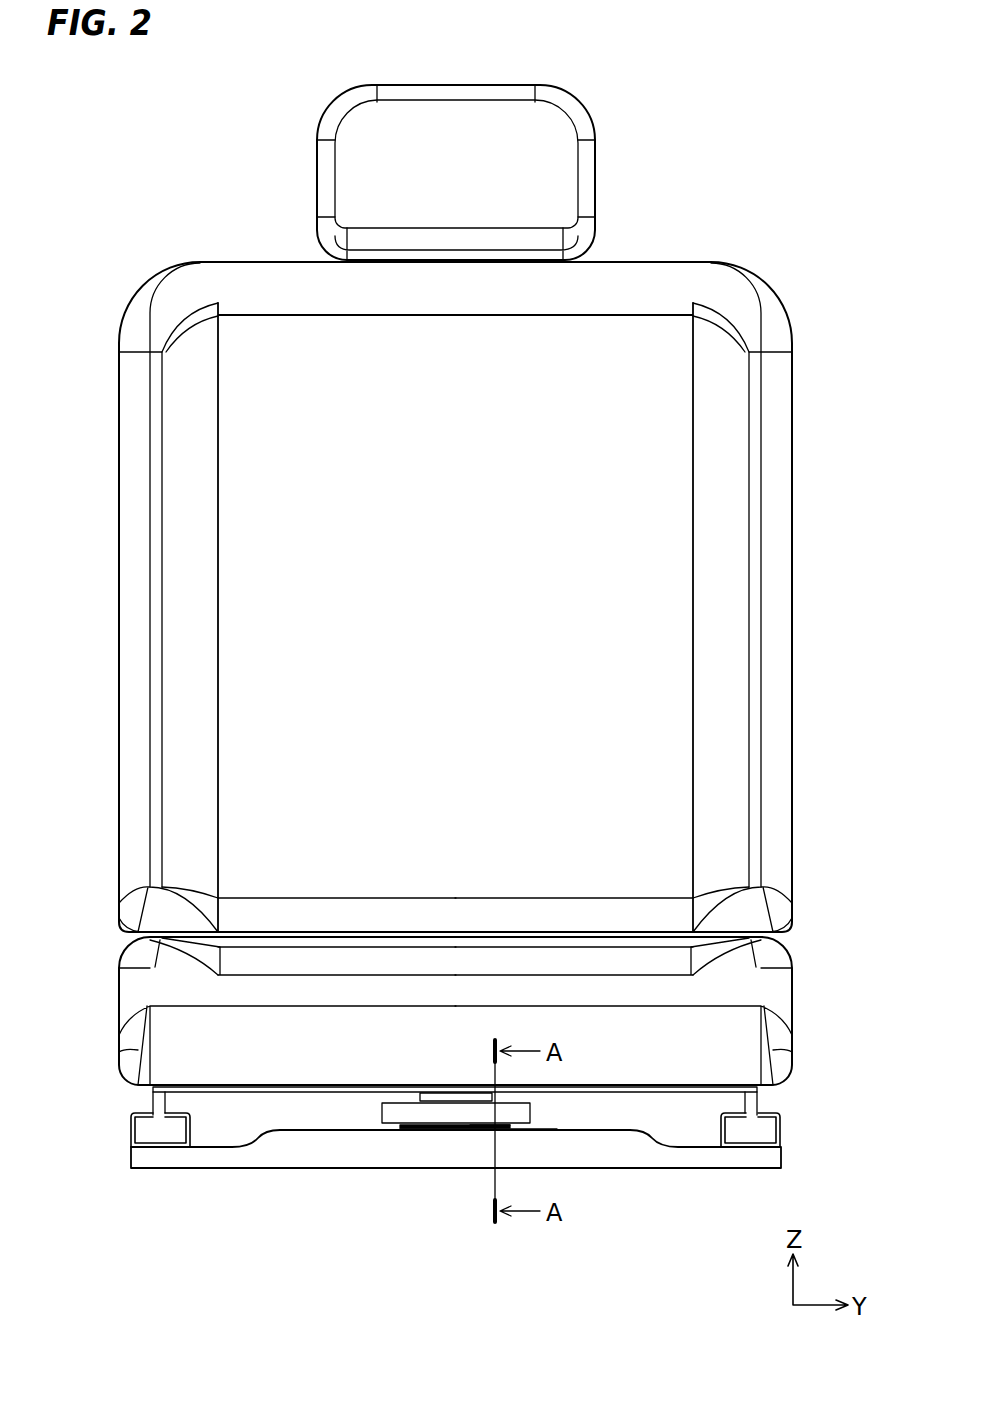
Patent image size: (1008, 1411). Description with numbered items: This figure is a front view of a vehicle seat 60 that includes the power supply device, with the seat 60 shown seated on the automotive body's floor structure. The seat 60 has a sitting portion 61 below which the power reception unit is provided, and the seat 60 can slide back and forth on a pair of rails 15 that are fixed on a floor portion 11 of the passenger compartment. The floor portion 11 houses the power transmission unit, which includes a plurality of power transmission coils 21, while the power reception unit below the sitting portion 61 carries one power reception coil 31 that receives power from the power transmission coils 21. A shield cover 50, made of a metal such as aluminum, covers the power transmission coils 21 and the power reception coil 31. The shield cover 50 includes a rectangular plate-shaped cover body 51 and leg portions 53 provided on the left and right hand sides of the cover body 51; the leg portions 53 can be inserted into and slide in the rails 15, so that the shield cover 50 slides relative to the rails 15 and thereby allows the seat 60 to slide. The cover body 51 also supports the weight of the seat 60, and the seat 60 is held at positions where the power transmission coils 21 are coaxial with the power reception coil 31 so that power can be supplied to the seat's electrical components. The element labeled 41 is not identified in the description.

The seat 60 is at (498, 585).
The sitting portion 61 is at (708, 1042).
The shield cover 50 is at (502, 1173).
The cover body 51 is at (328, 1092).
The leg portions 53 is at (158, 1108).
The rails 15 is at (131, 1138).
The load detection unit 41 is at (420, 1112).
The floor portion 11 is at (417, 1150).
The power transmission coils 21 is at (453, 1128).
The power reception coil 31 is at (477, 1127).